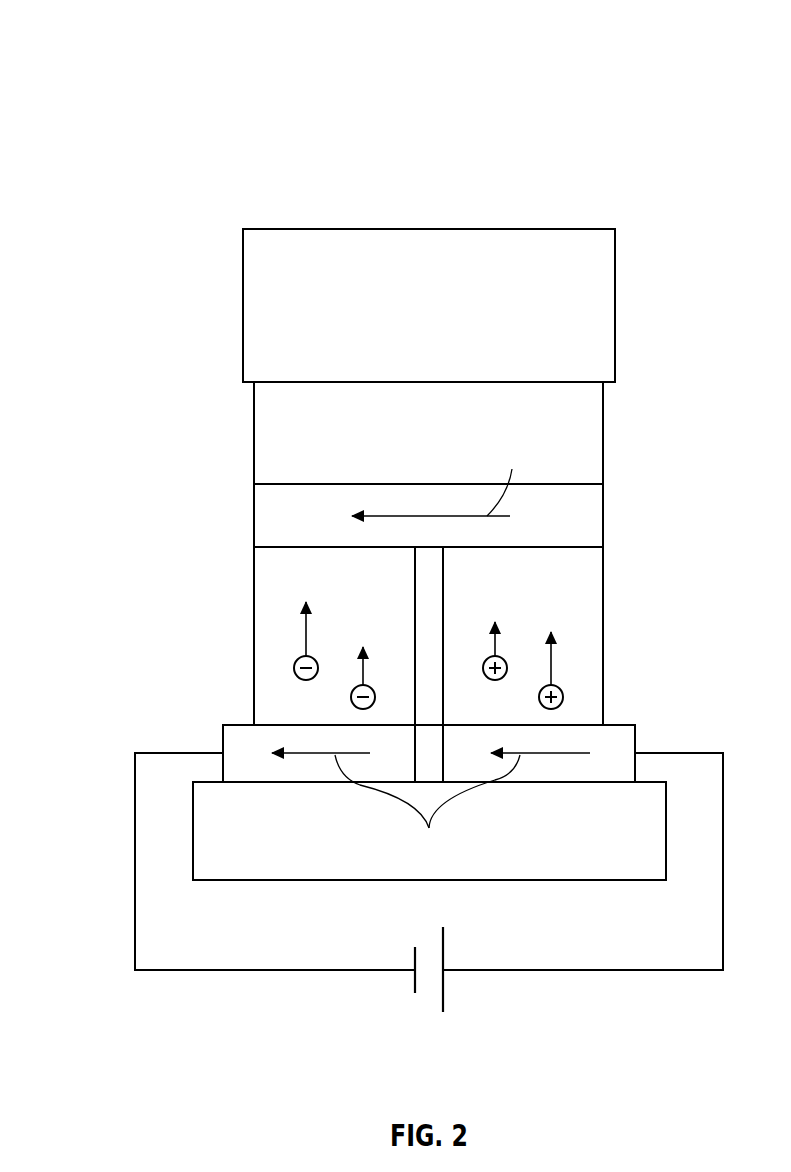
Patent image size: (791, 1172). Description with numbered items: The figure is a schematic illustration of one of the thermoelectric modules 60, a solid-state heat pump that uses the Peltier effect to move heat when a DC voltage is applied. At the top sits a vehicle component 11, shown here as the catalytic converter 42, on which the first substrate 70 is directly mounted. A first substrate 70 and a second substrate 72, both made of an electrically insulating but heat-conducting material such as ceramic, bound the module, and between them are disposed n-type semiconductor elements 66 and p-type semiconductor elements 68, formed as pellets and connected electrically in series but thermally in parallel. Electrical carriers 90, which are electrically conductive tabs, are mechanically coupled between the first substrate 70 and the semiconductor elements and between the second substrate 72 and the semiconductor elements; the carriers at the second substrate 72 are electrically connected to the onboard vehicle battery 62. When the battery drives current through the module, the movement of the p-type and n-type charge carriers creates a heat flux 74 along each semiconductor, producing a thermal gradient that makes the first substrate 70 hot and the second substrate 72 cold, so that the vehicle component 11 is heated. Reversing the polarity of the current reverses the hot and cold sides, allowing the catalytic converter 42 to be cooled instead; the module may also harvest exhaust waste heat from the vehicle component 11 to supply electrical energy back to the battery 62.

The thermoelectric module 60 is at (138, 58).
The vehicle component 11 is at (572, 229).
The catalytic converter 42 is at (616, 280).
The first substrate 70 is at (605, 420).
The electrical carriers 90 is at (604, 506).
The n-type semiconductor elements 66 is at (254, 605).
The p-type semiconductor elements 68 is at (605, 603).
The heat flux 74 is at (305, 628).
The second substrate 72 is at (667, 830).
The onboard vehicle battery 62 is at (445, 947).